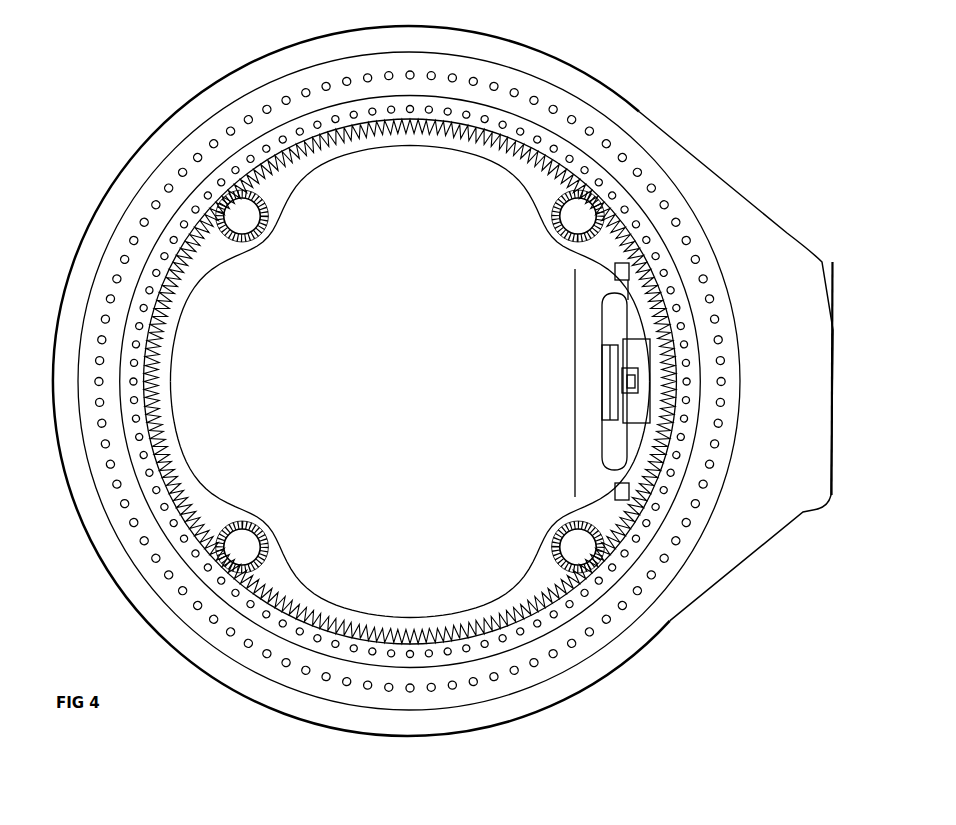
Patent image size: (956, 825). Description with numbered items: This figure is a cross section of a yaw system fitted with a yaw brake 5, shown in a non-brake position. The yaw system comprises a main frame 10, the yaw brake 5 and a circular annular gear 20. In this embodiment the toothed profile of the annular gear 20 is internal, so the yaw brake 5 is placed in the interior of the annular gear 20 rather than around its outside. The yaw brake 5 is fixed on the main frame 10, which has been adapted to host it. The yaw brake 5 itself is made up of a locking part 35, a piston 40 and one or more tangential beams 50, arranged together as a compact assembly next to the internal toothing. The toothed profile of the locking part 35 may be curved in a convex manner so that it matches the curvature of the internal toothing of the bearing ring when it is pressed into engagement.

The yaw brake 5 is at (606, 428).
The main frame 10 is at (520, 562).
The circular annular gear 20 is at (315, 170).
The locking part 35 is at (636, 424).
The piston 40 is at (617, 376).
The tangential beam 50 is at (615, 300).